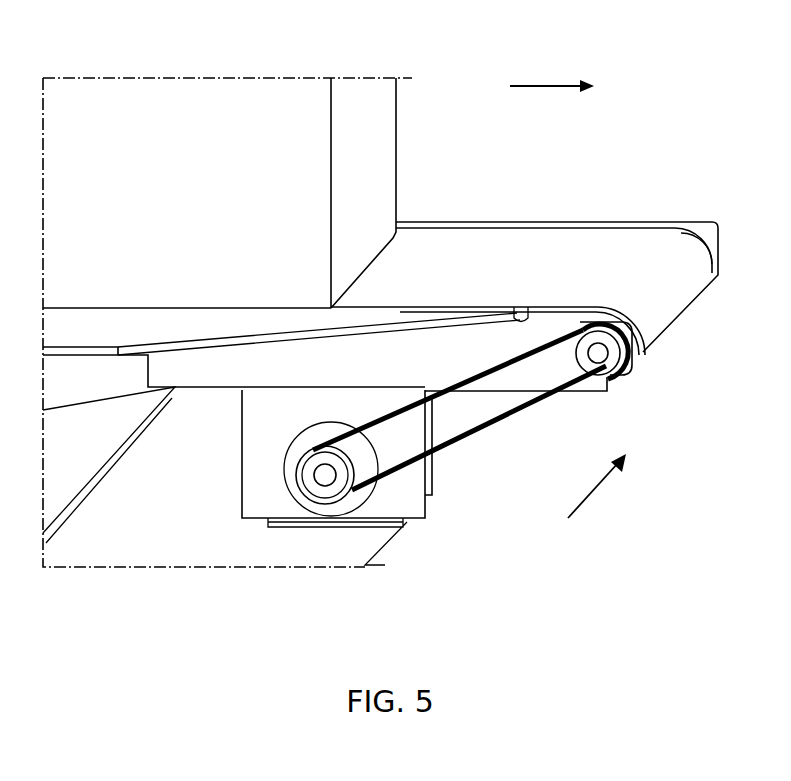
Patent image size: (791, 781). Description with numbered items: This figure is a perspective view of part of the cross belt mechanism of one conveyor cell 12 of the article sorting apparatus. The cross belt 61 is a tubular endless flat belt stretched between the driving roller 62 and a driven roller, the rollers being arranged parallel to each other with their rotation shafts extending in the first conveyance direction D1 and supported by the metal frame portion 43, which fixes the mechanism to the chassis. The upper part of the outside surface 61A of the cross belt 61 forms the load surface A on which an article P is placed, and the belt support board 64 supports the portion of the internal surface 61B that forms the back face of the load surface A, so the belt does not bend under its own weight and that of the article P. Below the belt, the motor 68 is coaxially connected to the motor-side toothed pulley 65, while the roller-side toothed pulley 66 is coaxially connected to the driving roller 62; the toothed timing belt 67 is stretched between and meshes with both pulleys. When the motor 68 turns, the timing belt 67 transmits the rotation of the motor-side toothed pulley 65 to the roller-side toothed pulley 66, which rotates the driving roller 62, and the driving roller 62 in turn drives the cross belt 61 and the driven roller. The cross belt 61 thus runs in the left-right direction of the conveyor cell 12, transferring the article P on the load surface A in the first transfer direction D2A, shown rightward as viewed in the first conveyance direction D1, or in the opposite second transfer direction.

The article P is at (219, 93).
The conveyor cell 12 is at (657, 68).
The first transfer direction D2A is at (552, 76).
The first conveyance direction D1 is at (597, 486).
The belt support board 64 is at (280, 322).
The cross belt 61 is at (463, 240).
The load surface A is at (502, 240).
The outside surface 61A is at (508, 292).
The internal surface 61B is at (540, 313).
The driving roller 62 is at (605, 360).
The roller-side toothed pulley 66 is at (615, 352).
The timing belt 67 is at (490, 430).
The frame portion 43 is at (212, 380).
The motor-side toothed pulley 65 is at (312, 487).
The motor 68 is at (328, 503).